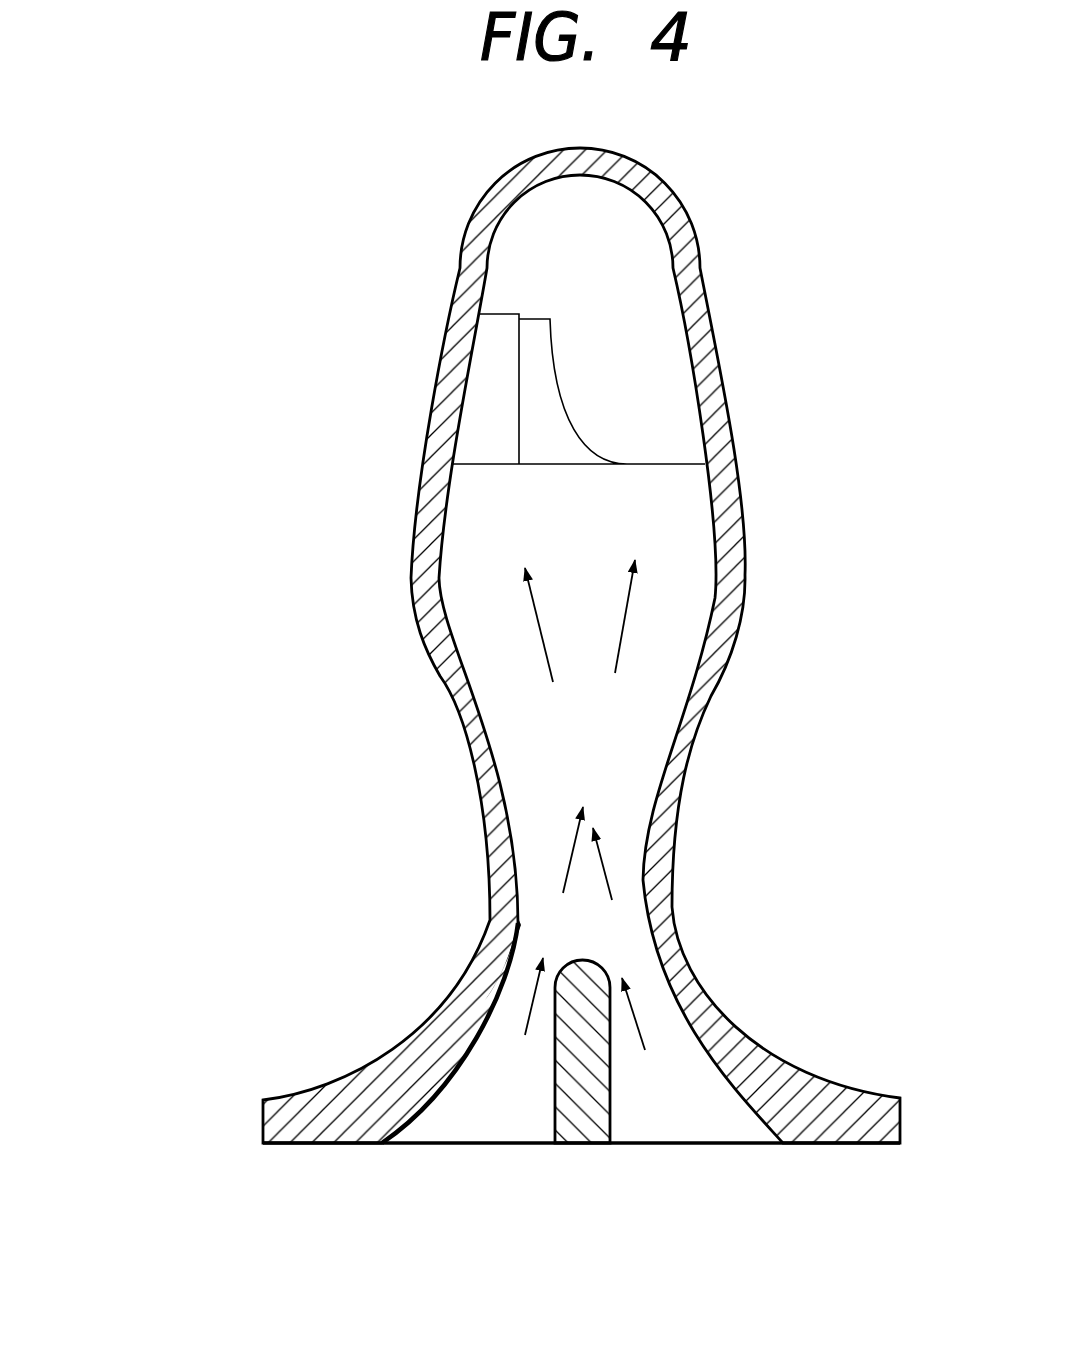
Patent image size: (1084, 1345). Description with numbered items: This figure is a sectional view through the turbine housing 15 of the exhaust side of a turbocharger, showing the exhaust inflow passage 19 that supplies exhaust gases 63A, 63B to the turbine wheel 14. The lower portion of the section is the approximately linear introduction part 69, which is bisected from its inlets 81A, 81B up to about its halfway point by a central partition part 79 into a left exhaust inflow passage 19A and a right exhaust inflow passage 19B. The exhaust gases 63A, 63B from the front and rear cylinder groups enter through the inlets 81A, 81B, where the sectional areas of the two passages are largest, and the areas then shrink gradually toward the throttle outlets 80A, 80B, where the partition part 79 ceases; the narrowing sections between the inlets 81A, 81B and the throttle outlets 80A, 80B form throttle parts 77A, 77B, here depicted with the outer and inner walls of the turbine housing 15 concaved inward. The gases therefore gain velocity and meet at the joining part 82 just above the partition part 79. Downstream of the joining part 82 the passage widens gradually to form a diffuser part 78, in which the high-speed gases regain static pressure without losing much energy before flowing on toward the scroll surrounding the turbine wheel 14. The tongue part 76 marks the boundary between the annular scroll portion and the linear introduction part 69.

The turbine wheel 14 is at (543, 397).
The turbine housing 15 is at (620, 163).
The exhaust inflow passage 19 is at (678, 1225).
The left exhaust inflow passage 19A is at (510, 1147).
The right exhaust inflow passage 19B is at (647, 1147).
The exhaust gas 63A is at (617, 652).
The exhaust gas 63B is at (645, 1050).
The introduction part 69 is at (264, 454).
The tongue part 76 is at (633, 500).
The throttle part 77A is at (453, 918).
The throttle part 77B is at (700, 922).
The diffuser part 78 is at (700, 913).
The partition part 79 is at (557, 1067).
The throttle outlet 80A is at (547, 940).
The throttle outlet 80B is at (623, 952).
The inlet 81A is at (420, 1145).
The inlet 81B is at (728, 1145).
The joining part 82 is at (675, 910).